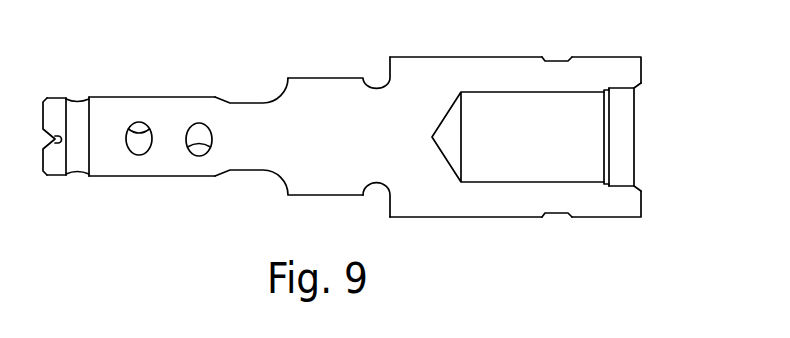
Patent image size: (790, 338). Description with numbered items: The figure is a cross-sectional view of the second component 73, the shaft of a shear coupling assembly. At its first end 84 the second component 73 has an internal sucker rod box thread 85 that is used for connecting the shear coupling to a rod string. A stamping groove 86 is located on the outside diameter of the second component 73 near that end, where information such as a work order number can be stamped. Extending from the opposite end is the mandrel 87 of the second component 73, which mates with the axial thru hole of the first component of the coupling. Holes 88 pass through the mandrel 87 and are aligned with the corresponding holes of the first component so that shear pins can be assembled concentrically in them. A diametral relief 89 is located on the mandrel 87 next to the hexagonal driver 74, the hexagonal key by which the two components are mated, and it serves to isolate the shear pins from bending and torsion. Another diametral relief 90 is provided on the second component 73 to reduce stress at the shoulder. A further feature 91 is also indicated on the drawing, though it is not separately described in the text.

The second component 73 is at (437, 57).
The hexagonal key 74 is at (300, 197).
The first end 84 is at (635, 107).
The internal sucker rod box thread 85 is at (505, 94).
The stamping groove 86 is at (555, 57).
The mandrel 87 is at (123, 97).
The holes 88 is at (80, 101).
The diametral relief 89 is at (248, 102).
The diametral relief 90 is at (373, 192).
The notch 91 is at (386, 70).